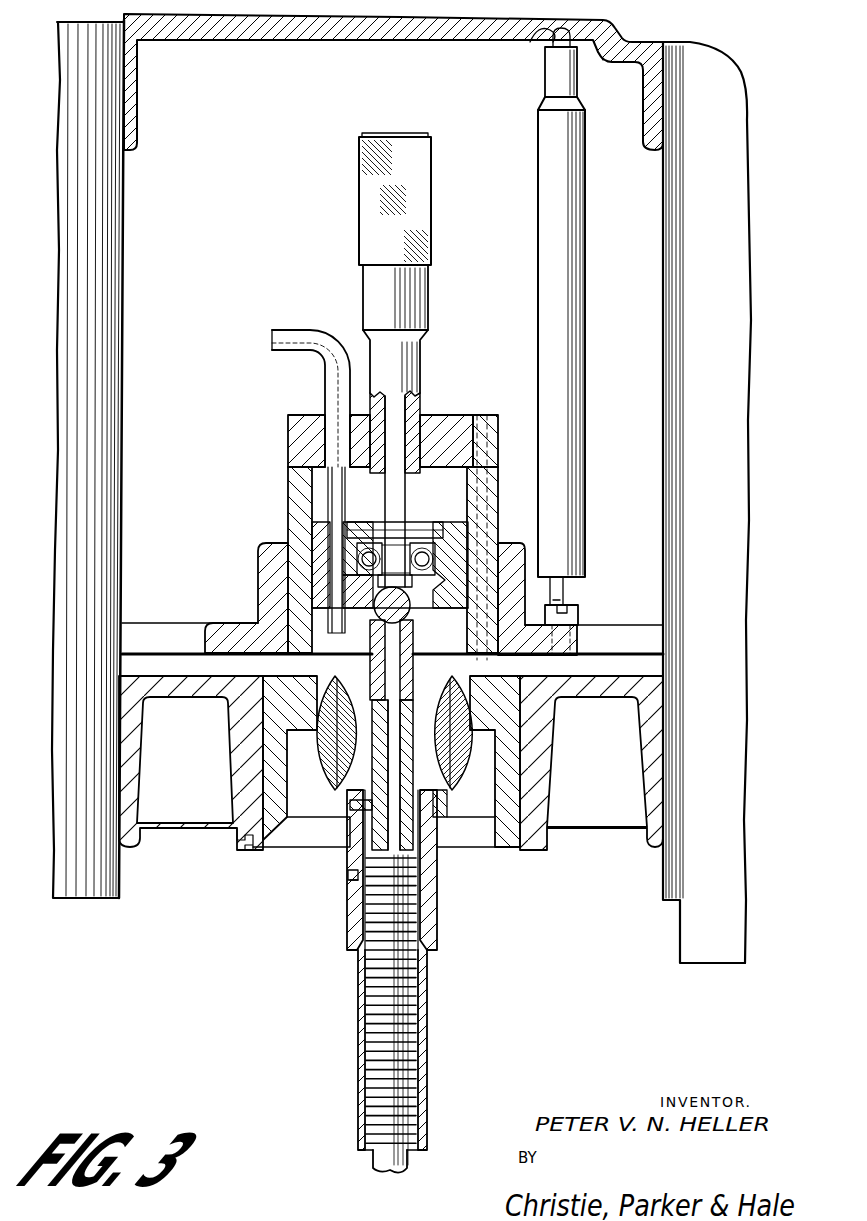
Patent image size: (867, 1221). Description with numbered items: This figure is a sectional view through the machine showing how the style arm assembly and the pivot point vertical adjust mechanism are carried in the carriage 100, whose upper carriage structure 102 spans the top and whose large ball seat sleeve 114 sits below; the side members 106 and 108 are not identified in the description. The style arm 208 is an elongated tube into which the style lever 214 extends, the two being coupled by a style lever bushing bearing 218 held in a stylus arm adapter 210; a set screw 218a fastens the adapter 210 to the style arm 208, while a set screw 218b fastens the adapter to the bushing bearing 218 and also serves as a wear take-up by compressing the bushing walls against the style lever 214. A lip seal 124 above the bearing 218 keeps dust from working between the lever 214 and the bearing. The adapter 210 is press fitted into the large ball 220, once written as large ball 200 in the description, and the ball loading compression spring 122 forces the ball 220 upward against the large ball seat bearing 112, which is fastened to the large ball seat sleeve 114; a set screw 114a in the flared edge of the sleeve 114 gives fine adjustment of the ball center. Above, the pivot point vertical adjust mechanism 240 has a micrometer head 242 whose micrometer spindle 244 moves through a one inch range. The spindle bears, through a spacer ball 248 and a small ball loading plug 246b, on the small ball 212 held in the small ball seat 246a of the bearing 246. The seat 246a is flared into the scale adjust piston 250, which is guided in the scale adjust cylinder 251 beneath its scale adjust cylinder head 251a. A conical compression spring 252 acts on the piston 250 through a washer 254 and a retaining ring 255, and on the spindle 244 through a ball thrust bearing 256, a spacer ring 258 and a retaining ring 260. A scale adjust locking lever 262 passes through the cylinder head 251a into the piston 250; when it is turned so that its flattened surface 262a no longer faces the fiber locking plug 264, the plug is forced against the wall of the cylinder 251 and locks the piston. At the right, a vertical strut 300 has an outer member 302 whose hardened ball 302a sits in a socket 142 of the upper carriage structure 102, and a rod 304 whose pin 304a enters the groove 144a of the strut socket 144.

The carriage 100 is at (656, 36).
The upper carriage structure 102 is at (630, 28).
The right side wall 106 is at (663, 258).
The left side wall 108 is at (124, 195).
The large ball seat bearing 112 is at (482, 702).
The large ball seat sleeve 114 is at (277, 760).
The set screw 114a is at (237, 826).
The ball loading compression spring 122 is at (372, 1013).
The lip seal 124 is at (360, 765).
The socket 142 is at (540, 32).
The strut socket 144 is at (578, 617).
The groove 144a is at (562, 612).
The large ball 200 is at (390, 128).
The style arm 208 is at (427, 993).
The stylus arm adapter 210 is at (444, 920).
The small ball 212 is at (460, 757).
The style lever 214 is at (383, 973).
The style lever bushing bearing 218 is at (418, 821).
The set screw 218a is at (350, 880).
The set screw 218b is at (348, 876).
The large ball 220 is at (333, 712).
The pivot point vertical adjust mechanism 240 is at (440, 277).
The micrometer head 242 is at (430, 298).
The micrometer spindle 244 is at (410, 472).
The bearing 246 is at (342, 643).
The small ball seat 246a is at (438, 644).
The small ball loading plug 246b is at (333, 656).
The spacer ball 248 is at (398, 605).
The scale adjust piston 250 is at (455, 528).
The scale adjust cylinder 251 is at (287, 476).
The scale adjust cylinder head 251a is at (296, 408).
The conical compression spring 252 is at (432, 548).
The washer 254 is at (456, 491).
The retaining ring 255 is at (363, 527).
The ball thrust bearing 256 is at (440, 568).
The spacer ring 258 is at (373, 575).
The retaining ring 260 is at (377, 582).
The scale adjust locking lever 262 is at (294, 325).
The flattened surface 262a is at (332, 480).
The fiber locking plug 264 is at (318, 555).
The vertical strut 300 is at (518, 178).
The outer member 302 is at (588, 188).
The hardened ball 302a is at (593, 56).
The rod 304 is at (558, 588).
The pin 304a is at (563, 603).